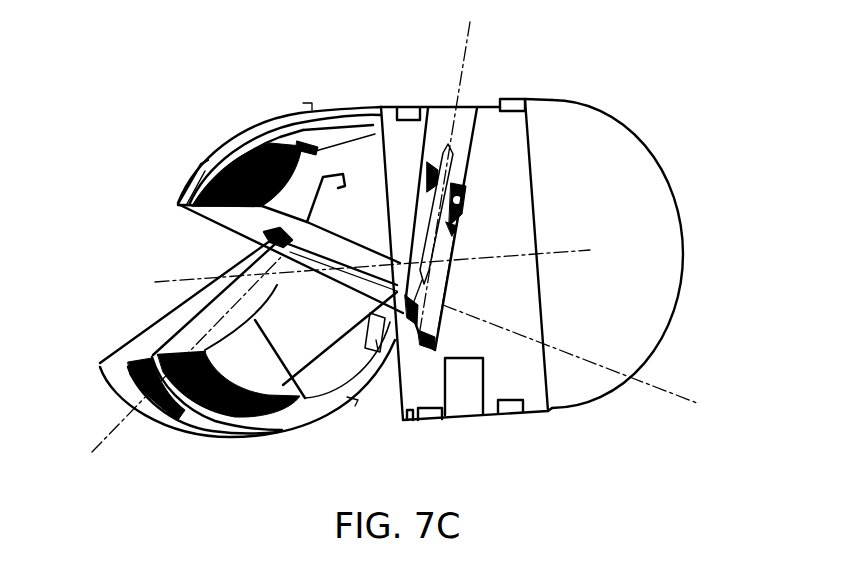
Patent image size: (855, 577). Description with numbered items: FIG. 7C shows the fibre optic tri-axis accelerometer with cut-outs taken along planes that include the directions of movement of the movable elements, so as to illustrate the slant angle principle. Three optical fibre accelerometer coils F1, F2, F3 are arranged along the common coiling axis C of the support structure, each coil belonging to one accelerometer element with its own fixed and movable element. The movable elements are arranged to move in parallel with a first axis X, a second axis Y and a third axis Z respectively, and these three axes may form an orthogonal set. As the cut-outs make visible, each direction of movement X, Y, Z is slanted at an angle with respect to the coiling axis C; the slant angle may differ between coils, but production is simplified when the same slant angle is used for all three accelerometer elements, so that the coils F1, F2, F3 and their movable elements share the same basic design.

The first optical fibre accelerometer coil F1 is at (222, 398).
The second optical fibre accelerometer coil F2 is at (270, 157).
The third optical fibre accelerometer coil F3 is at (470, 107).
The first axis X is at (103, 442).
The second axis Y is at (684, 395).
The third axis Z is at (468, 25).
The coiling axis C is at (163, 280).